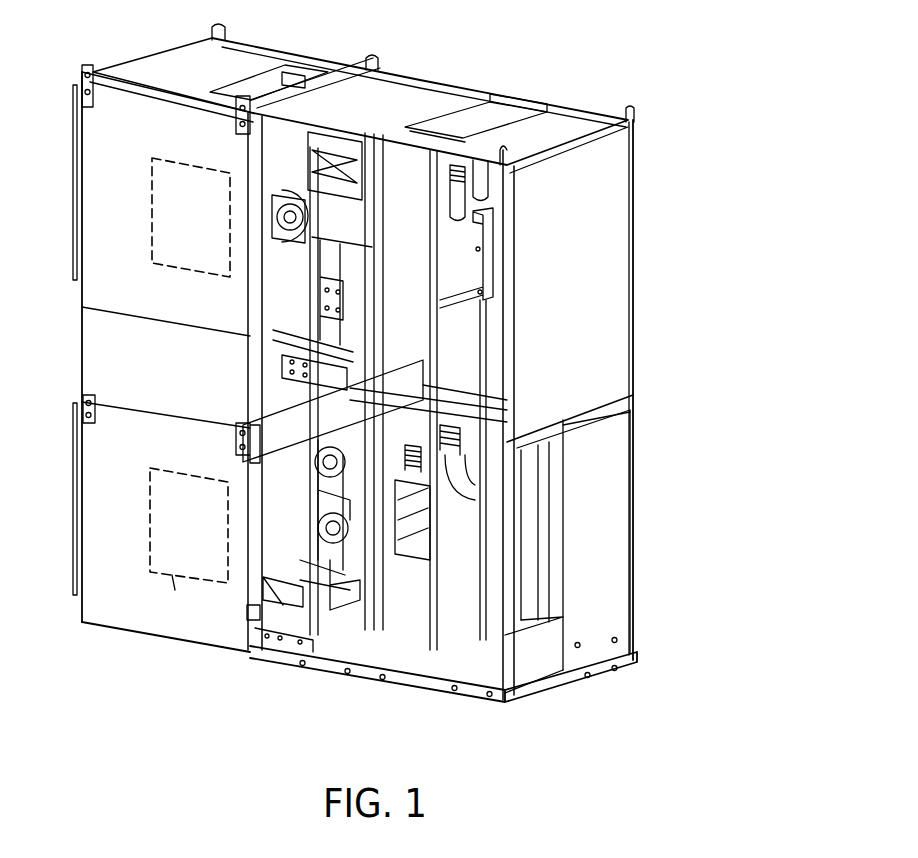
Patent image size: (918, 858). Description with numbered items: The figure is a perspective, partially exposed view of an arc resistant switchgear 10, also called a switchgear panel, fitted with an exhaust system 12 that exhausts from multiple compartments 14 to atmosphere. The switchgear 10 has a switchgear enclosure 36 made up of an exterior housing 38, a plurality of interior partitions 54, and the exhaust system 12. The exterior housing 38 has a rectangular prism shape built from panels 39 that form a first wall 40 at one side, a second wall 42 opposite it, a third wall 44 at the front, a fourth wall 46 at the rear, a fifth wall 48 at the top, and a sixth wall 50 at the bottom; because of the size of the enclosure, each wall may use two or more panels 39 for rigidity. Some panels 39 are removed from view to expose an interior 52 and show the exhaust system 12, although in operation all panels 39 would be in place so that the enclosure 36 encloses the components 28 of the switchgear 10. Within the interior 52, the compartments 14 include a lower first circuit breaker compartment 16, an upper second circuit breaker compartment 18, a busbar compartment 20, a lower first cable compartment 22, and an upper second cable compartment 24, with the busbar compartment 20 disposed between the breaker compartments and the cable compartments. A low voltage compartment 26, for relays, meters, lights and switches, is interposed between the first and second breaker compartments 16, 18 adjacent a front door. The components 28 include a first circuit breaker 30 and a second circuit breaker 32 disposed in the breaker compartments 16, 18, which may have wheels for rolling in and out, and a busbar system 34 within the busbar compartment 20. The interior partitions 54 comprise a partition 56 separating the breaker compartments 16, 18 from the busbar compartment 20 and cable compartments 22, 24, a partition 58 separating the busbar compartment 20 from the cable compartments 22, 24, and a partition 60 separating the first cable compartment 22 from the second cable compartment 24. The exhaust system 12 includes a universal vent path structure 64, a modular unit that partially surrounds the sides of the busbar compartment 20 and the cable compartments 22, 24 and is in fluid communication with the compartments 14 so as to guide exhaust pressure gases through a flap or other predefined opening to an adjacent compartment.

The arc resistant switchgear 10 is at (754, 147).
The exhaust system 12 is at (450, 662).
The compartments 14 is at (135, 232).
The first circuit breaker compartment 16 is at (100, 588).
The second circuit breaker compartment 18 is at (115, 190).
The busbar compartment 20 is at (345, 242).
The first cable compartment 22 is at (600, 588).
The second cable compartment 24 is at (477, 288).
The low voltage compartment 26 is at (100, 350).
The components 28 is at (175, 183).
The first circuit breaker 30 is at (175, 575).
The second circuit breaker 32 is at (150, 182).
The busbar system 34 is at (285, 482).
The switchgear enclosure 36 is at (605, 668).
The exterior housing 38 is at (620, 360).
The panels 39 is at (578, 115).
The first wall 40 is at (113, 610).
The second wall 42 is at (640, 458).
The third wall 44 is at (97, 290).
The fourth wall 46 is at (610, 202).
The fifth wall 48 is at (348, 100).
The sixth wall 50 is at (365, 672).
The interior 52 is at (590, 518).
The interior partitions 54 is at (455, 243).
The partition 56 is at (262, 296).
The partition 58 is at (453, 227).
The partition 60 is at (505, 398).
The universal vent path structure 64 is at (410, 668).